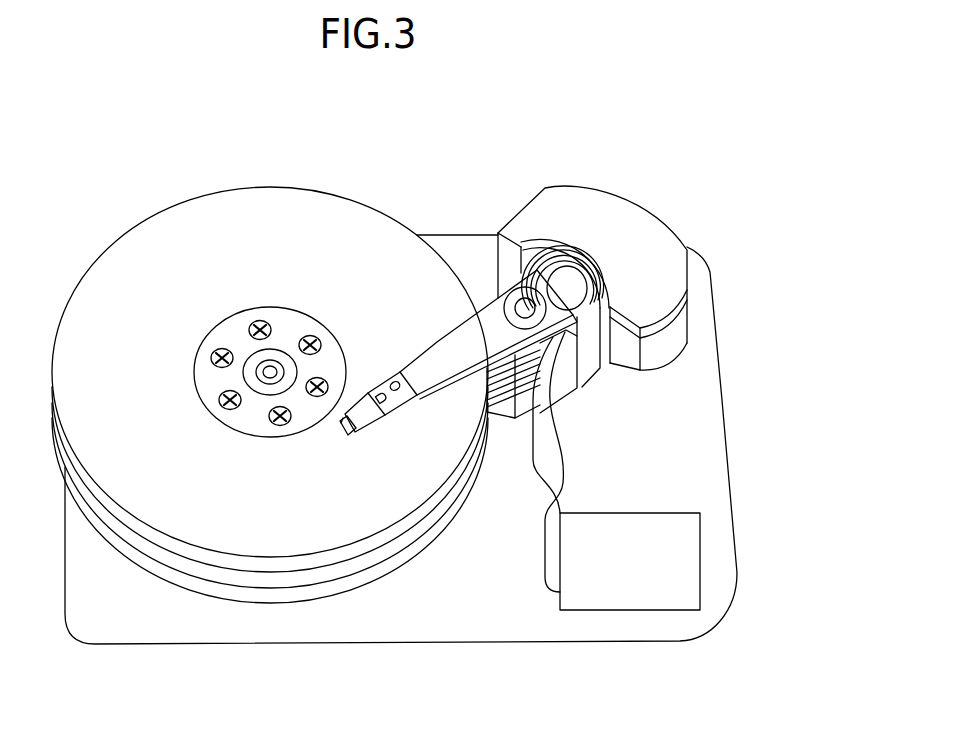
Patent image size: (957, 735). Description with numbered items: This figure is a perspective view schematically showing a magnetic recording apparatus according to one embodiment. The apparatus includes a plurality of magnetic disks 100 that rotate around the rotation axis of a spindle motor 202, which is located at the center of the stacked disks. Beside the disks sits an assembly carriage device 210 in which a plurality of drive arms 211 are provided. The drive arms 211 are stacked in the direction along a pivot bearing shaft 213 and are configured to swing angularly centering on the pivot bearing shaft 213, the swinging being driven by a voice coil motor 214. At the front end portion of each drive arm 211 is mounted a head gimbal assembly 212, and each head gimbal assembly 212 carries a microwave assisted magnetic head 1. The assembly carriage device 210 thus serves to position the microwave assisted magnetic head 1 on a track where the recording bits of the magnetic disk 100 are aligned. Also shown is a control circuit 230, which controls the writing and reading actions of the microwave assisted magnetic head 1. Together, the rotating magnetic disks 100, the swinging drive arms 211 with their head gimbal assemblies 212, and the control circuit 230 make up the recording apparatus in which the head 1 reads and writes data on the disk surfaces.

The microwave assisted magnetic head 1 is at (353, 433).
The magnetic disk 100 is at (148, 238).
The spindle motor 202 is at (272, 368).
The assembly carriage device 210 is at (606, 182).
The drive arm 211 is at (450, 343).
The head gimbal assembly 212 is at (362, 398).
The pivot bearing shaft 213 is at (524, 304).
The voice coil motor 214 is at (600, 360).
The control circuit 230 is at (637, 610).